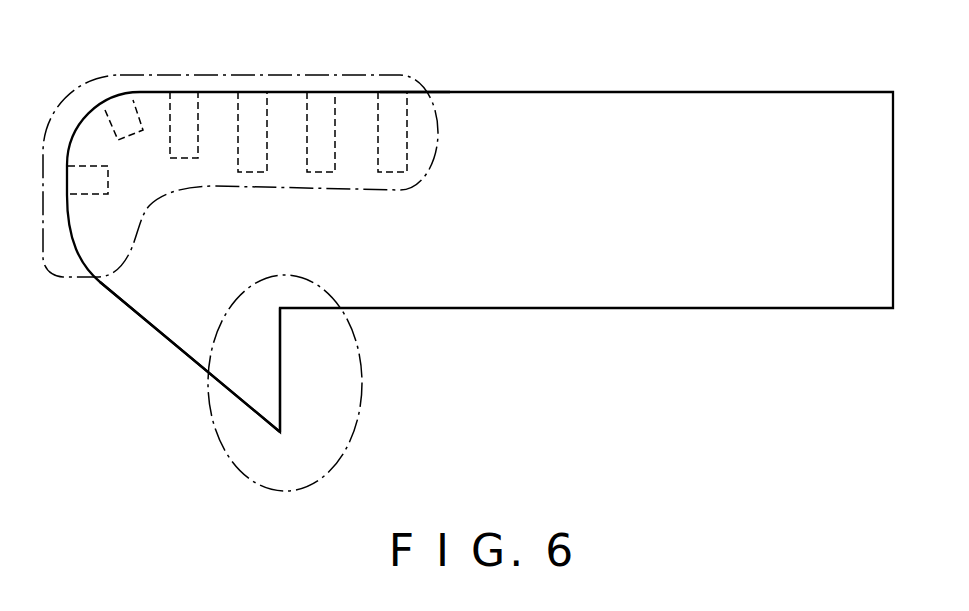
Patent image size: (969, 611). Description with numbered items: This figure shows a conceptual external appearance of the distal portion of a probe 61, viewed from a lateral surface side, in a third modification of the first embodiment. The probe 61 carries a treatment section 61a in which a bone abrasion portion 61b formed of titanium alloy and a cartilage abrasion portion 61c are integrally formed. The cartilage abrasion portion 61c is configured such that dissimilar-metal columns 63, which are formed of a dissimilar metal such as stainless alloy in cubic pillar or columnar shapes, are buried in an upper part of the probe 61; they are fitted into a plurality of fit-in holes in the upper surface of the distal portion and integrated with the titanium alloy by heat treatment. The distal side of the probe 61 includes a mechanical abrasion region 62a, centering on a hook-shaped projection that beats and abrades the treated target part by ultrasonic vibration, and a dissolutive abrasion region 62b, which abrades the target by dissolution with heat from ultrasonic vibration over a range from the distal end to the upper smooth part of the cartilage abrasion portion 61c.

The probe 61 is at (877, 92).
The treatment section 61a is at (176, 368).
The bone abrasion portion 61b is at (281, 416).
The cartilage abrasion portion 61c is at (424, 105).
The mechanical abrasion region 62a is at (362, 372).
The dissolutive abrasion region 62b is at (166, 75).
The dissimilar-metal columns 63 is at (253, 105).